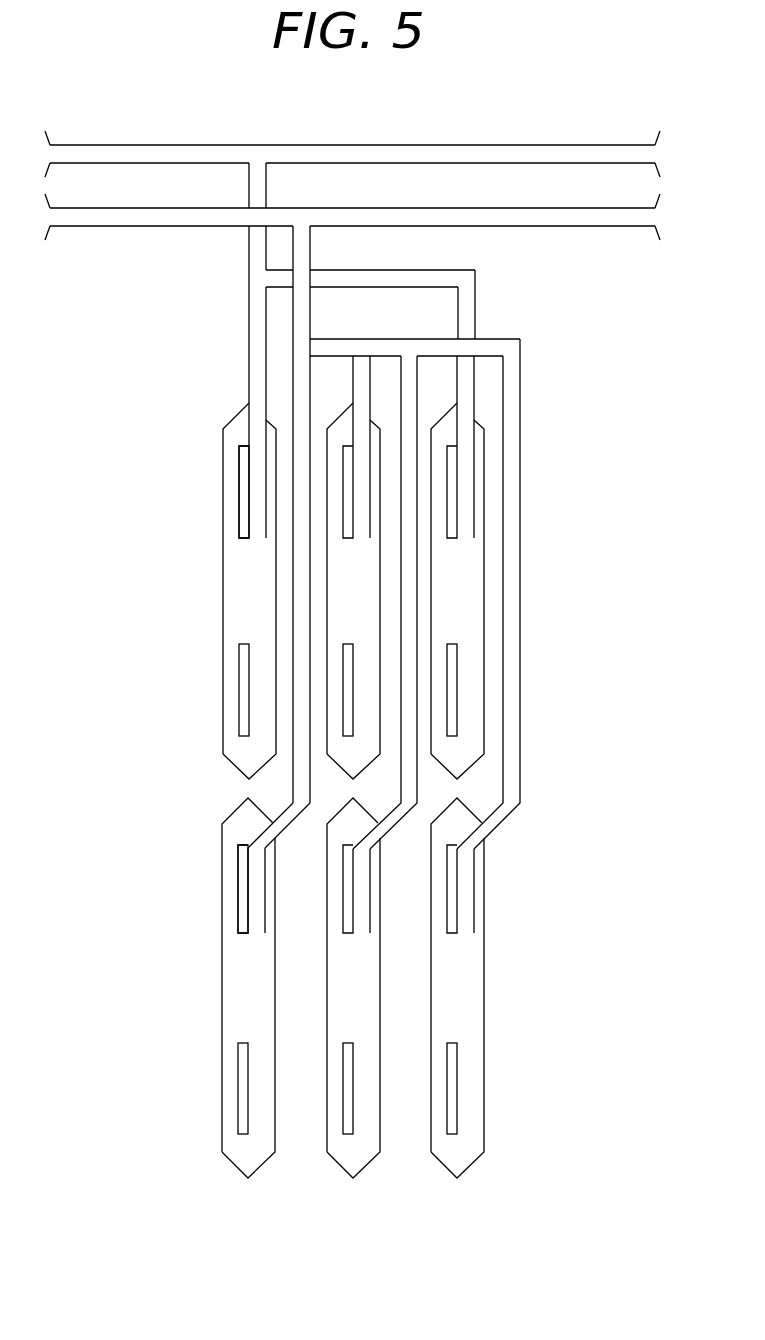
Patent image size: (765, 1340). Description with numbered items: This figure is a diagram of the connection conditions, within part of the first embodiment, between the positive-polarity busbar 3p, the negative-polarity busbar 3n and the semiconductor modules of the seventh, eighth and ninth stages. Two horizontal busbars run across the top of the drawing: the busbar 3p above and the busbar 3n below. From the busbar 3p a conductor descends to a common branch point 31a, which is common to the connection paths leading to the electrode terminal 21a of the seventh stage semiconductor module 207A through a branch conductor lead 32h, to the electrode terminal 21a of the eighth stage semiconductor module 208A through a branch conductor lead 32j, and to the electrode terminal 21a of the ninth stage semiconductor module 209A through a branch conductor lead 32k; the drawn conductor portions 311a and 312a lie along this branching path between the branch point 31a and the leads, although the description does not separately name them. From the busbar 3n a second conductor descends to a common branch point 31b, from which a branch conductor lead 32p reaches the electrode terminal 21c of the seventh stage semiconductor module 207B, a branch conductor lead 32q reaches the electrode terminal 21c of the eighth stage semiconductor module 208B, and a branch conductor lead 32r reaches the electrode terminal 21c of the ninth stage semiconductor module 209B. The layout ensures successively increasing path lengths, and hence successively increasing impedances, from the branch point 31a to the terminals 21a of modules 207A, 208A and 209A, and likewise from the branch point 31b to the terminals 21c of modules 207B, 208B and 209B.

The positive-polarity busbar 3p is at (437, 148).
The negative-polarity busbar 3n is at (539, 208).
The common branch point 31a is at (258, 276).
The common branch point 31b is at (303, 347).
The horizontal wiring portion 311a is at (362, 283).
The vertical wiring portion 312a is at (470, 277).
The branch conductor lead 32k is at (468, 320).
The branch conductor lead 32h is at (255, 383).
The branch conductor lead 32j is at (363, 310).
The branch conductor lead 32q is at (410, 789).
The branch conductor lead 32r is at (513, 597).
The branch conductor lead 32p is at (300, 787).
The electrode terminal 21a is at (243, 478).
The electrode terminal 21c is at (243, 895).
The seventh stage semiconductor module 207A is at (240, 582).
The eighth stage semiconductor module 208A is at (332, 735).
The ninth stage semiconductor module 209A is at (472, 738).
The seventh stage semiconductor module 207B is at (238, 1162).
The eighth stage semiconductor module 208B is at (344, 1162).
The ninth stage semiconductor module 209B is at (448, 1162).